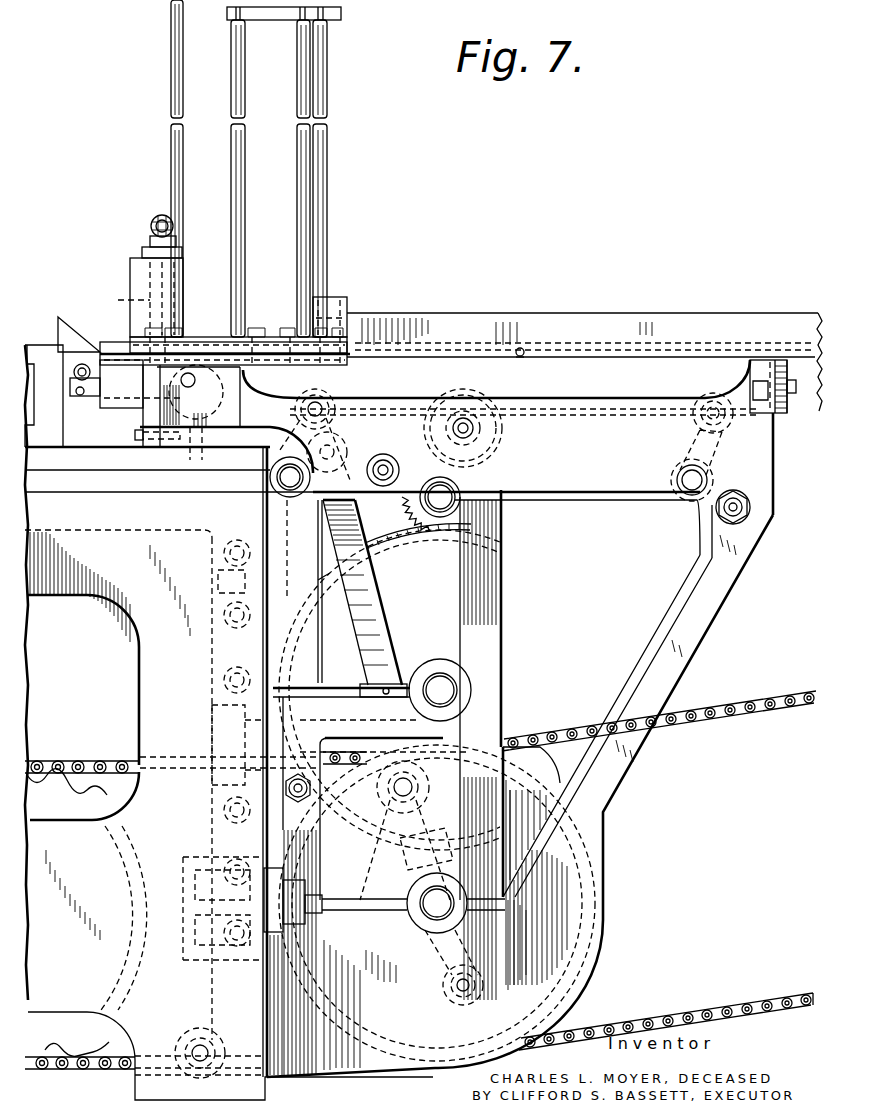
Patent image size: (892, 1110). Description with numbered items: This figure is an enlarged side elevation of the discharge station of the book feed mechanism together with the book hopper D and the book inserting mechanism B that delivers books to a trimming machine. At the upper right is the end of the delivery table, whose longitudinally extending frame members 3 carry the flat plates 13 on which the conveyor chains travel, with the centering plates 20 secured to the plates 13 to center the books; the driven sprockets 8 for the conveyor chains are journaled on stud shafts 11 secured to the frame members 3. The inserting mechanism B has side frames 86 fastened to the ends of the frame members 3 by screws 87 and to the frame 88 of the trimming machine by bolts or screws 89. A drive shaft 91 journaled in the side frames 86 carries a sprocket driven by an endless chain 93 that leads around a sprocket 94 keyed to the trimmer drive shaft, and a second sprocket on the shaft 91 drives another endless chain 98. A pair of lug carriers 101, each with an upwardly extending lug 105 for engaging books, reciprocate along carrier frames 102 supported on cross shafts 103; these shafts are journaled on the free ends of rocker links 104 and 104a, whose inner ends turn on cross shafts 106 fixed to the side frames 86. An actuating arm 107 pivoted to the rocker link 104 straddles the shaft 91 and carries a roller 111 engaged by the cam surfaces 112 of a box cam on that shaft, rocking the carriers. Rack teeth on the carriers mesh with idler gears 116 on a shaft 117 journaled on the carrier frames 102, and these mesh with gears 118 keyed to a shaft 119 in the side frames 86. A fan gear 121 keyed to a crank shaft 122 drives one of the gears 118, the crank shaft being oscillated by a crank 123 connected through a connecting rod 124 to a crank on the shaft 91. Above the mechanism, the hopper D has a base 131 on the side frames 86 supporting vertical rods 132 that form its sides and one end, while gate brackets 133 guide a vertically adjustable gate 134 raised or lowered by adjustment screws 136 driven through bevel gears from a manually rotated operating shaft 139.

The vertically disposed rods 132 is at (308, 85).
The vertically adjustable gate 134 is at (172, 160).
The operating shaft 139 is at (152, 230).
The gate brackets 133 is at (130, 272).
The adjustment screws 136 is at (123, 300).
The base 131 is at (347, 300).
The lug 105 is at (68, 318).
The centering plates 20 is at (597, 320).
The flat plates 13 is at (570, 362).
The driven sprockets 8 is at (742, 265).
The stud shafts 11 is at (108, 202).
The screws 87 is at (790, 385).
The frame members 3 is at (796, 393).
The rocker link 104 is at (318, 420).
The cross shafts 103 is at (330, 400).
The rocker link 104a is at (698, 430).
The idler gears 116 is at (482, 428).
The shaft 117 is at (480, 440).
The shaft 119 is at (452, 490).
The cross shafts 106 is at (280, 483).
The side frames 86 is at (760, 502).
The lug carriers 101 is at (90, 397).
The carrier frames 102 is at (125, 410).
The frame 88 is at (150, 650).
The endless chain 93 is at (112, 760).
The sprocket 94 is at (50, 1025).
The gears 118 is at (478, 530).
The bolts or screws 89 is at (318, 520).
The fan gear 121 is at (432, 593).
The actuating arm 107 is at (372, 628).
The crank shaft 122 is at (448, 688).
The crank 123 is at (380, 714).
The roller 111 is at (390, 800).
The connecting rod 124 is at (398, 880).
The drive shaft 91 is at (432, 908).
The cam surfaces 112 is at (384, 1005).
The endless chain 98 is at (718, 722).
The book inserting mechanism B is at (725, 607).
The hopper D is at (339, 174).